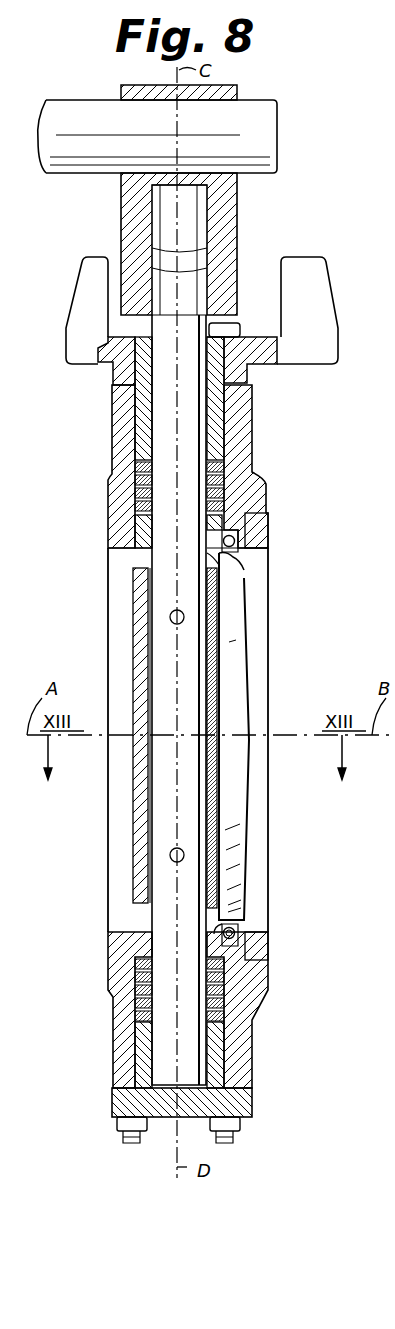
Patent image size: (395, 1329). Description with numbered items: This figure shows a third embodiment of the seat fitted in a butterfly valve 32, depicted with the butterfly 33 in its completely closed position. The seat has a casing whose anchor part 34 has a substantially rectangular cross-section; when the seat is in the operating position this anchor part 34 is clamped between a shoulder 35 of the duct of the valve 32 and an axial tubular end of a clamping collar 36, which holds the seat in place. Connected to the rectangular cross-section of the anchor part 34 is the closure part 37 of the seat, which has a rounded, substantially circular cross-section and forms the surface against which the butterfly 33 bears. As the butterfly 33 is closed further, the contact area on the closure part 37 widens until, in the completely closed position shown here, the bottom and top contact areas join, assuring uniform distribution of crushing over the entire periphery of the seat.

The valve 32 is at (253, 241).
The butterfly 33 is at (249, 707).
The anchor part 34 is at (224, 540).
The shoulder 35 is at (240, 926).
The clamping collar 36 is at (270, 944).
The closure part 37 is at (224, 556).